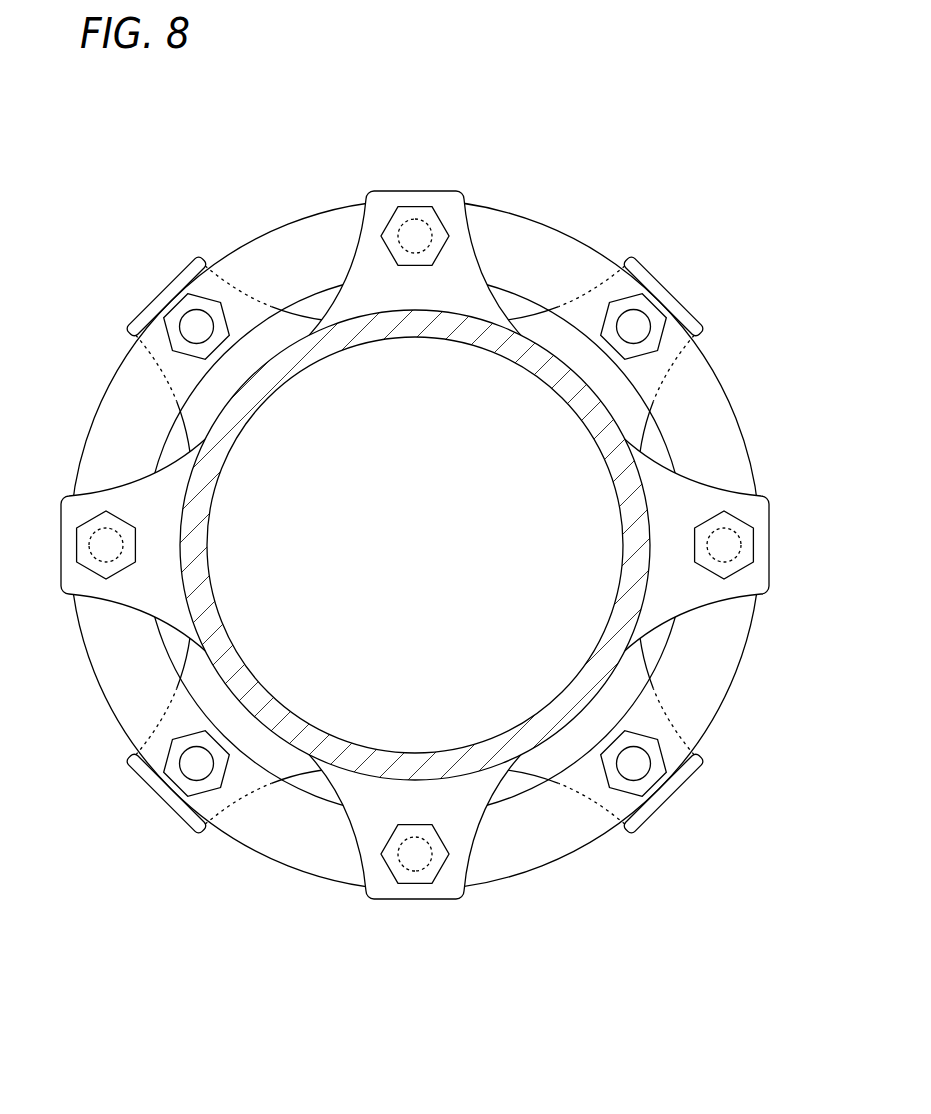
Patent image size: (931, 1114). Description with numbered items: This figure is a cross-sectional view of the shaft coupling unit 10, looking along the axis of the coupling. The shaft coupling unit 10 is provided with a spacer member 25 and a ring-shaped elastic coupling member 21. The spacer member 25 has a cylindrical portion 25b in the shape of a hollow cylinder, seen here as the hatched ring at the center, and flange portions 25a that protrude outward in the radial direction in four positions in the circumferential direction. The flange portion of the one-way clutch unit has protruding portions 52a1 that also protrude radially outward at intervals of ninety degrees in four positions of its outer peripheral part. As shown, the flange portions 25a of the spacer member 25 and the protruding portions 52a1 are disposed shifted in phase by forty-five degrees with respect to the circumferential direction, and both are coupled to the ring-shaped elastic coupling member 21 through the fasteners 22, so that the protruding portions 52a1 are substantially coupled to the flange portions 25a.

The shaft coupling unit 10 is at (465, 506).
The elastic coupling member 21 is at (415, 545).
The fastener 22 is at (524, 200).
The spacer member 25 is at (465, 545).
The flange portion 25a is at (415, 545).
The cylindrical portion 25b is at (465, 545).
The protruding portion 52a1 is at (415, 545).